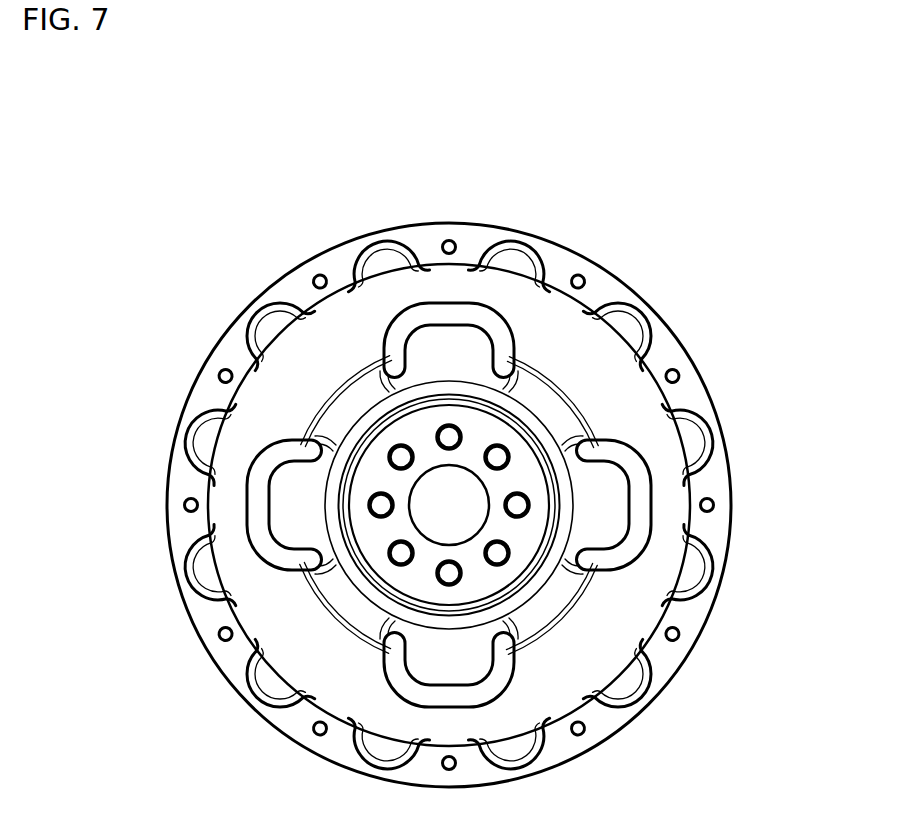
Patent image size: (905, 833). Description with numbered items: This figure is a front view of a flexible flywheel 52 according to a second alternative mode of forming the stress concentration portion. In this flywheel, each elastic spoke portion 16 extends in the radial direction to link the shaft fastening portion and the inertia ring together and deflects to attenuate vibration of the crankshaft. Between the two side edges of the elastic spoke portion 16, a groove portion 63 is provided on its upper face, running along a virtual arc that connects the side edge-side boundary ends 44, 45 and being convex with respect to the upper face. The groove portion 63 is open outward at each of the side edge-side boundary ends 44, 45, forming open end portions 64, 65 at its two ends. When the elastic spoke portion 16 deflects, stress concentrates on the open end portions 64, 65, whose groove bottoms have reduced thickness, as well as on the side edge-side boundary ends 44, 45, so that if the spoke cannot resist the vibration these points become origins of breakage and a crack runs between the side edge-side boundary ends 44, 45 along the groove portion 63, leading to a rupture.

The flexible flywheel 52 is at (722, 276).
The elastic spoke portion 16 is at (276, 393).
The groove portion 63 is at (345, 376).
The open end portion 64 is at (513, 356).
The open end portion 65 is at (604, 437).
The side edge-side boundary end 44 is at (389, 651).
The side edge-side boundary end 45 is at (307, 563).